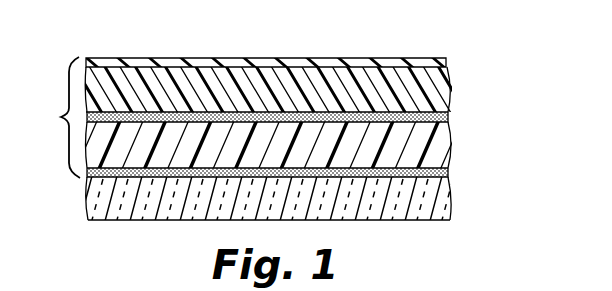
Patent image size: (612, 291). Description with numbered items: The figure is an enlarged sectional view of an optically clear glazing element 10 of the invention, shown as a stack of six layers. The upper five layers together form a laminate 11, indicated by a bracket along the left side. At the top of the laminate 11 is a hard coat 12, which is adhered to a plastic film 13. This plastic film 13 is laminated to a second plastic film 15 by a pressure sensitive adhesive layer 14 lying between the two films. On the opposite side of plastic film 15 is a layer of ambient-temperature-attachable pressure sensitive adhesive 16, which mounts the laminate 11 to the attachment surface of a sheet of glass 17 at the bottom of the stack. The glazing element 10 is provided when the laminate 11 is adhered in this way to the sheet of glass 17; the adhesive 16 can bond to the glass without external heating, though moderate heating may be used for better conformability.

The glazing element 10 is at (160, 27).
The laminate 11 is at (55, 117).
The hard coat 12 is at (421, 62).
The plastic film 13 is at (452, 78).
The pressure sensitive adhesive layer 14 is at (447, 116).
The plastic film 15 is at (445, 147).
The ambient-temperature-attachable pressure sensitive adhesive 16 is at (443, 170).
The sheet of glass 17 is at (443, 205).